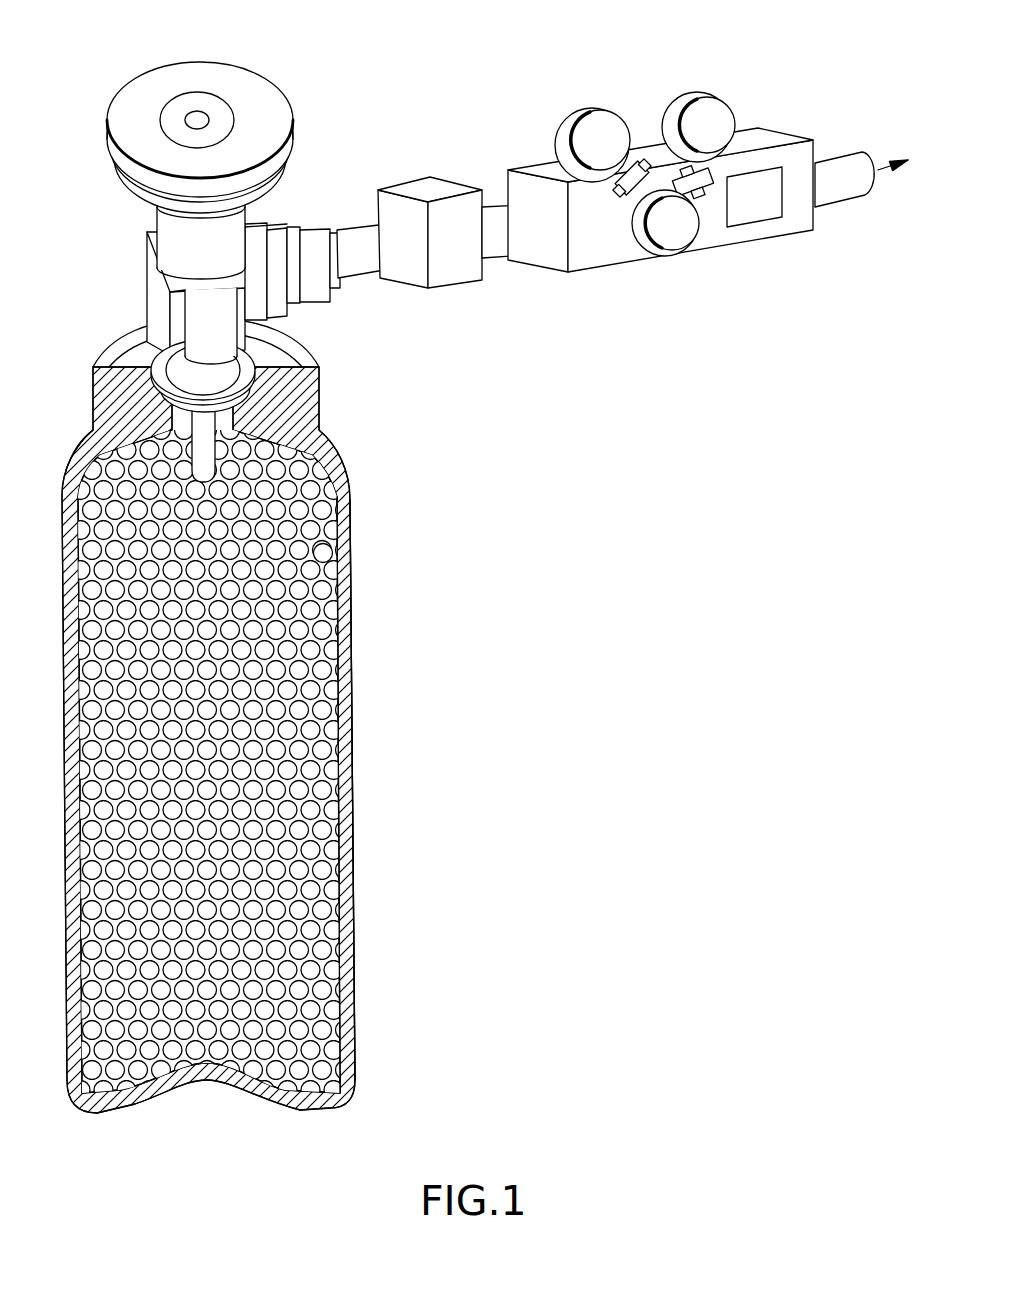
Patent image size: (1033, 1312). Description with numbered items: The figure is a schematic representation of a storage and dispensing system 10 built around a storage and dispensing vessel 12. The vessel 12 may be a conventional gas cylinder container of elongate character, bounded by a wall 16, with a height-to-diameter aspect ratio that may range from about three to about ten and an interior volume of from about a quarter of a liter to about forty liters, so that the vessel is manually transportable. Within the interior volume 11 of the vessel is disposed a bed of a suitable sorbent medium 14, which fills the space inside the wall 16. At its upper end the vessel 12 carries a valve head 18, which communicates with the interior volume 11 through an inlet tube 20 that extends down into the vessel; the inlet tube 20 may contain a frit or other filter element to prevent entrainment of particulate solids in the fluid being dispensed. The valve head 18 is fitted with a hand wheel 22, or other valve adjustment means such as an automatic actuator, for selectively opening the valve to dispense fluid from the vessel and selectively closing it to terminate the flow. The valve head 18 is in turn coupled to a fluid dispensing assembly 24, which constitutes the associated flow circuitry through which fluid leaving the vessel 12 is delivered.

The storage and dispensing system 10 is at (479, 570).
The interior volume 11 is at (312, 567).
The storage and dispensing vessel 12 is at (355, 928).
The sorbent medium 14 is at (323, 553).
The wall 16 is at (352, 713).
The valve head 18 is at (192, 325).
The inlet tube 20 is at (203, 445).
The hand wheel 22 is at (125, 108).
The fluid dispensing assembly 24 is at (470, 83).